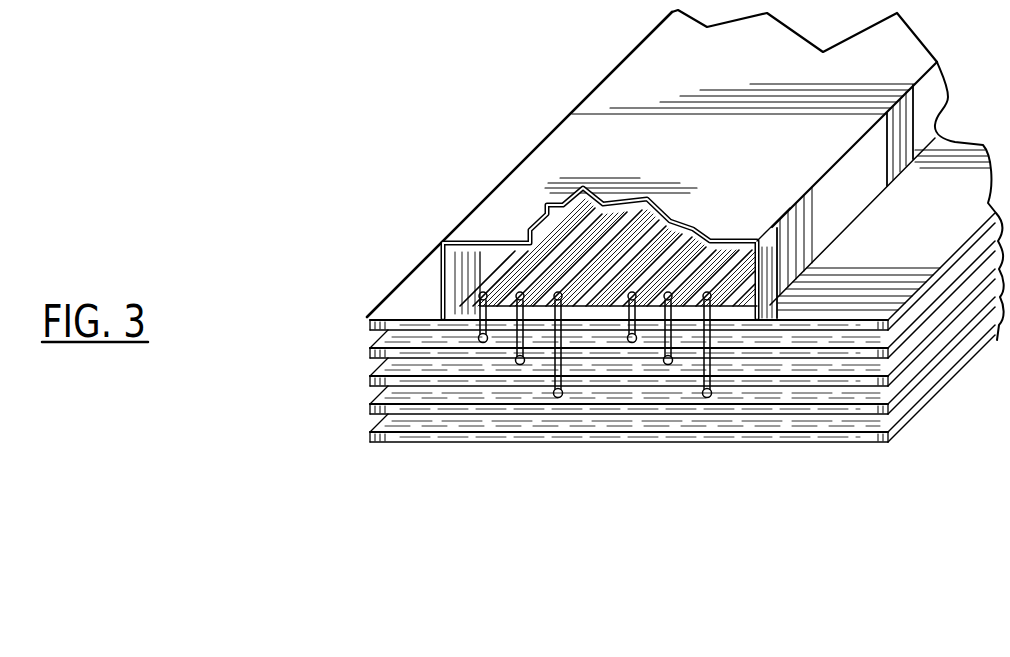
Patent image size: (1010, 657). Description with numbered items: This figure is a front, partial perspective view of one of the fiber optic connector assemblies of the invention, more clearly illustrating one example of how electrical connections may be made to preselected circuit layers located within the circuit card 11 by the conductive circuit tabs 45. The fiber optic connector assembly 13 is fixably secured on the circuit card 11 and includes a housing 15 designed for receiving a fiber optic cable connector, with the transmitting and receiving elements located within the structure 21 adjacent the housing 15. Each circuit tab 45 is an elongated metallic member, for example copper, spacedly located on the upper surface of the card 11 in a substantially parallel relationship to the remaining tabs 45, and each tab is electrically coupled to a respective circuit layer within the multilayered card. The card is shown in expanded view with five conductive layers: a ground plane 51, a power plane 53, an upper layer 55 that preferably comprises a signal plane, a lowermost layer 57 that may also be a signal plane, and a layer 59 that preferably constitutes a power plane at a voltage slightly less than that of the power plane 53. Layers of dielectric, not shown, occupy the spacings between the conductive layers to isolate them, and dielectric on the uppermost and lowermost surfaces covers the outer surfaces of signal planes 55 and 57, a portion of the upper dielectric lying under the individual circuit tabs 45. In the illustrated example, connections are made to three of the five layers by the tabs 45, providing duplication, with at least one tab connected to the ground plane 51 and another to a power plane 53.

The circuit card 11 is at (608, 350).
The fiber optic connector assembly 13 is at (570, 97).
The housing 15 is at (563, 157).
The structure 21 is at (657, 50).
The circuit tabs 45 is at (590, 262).
The ground plane 51 is at (372, 378).
The power plane 53 is at (372, 344).
The upper layer 55 is at (385, 312).
The lowermost layer 57 is at (388, 445).
The power plane layer 59 is at (376, 406).